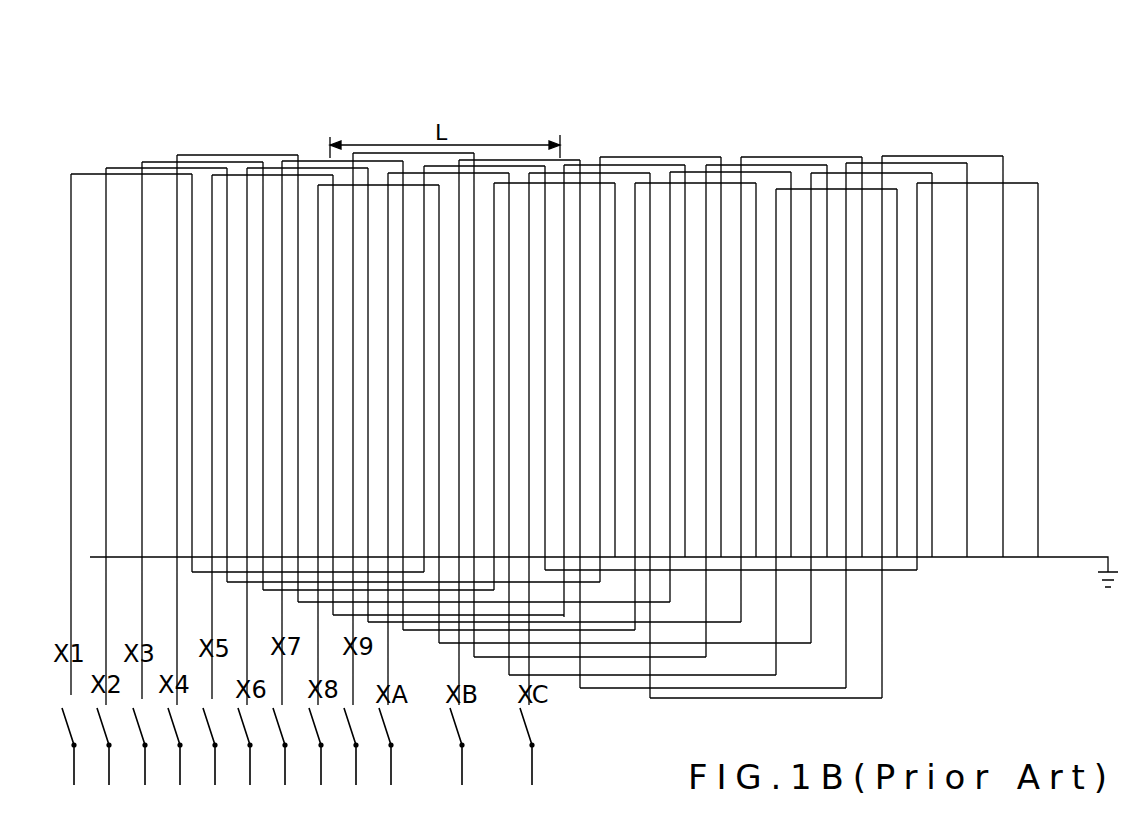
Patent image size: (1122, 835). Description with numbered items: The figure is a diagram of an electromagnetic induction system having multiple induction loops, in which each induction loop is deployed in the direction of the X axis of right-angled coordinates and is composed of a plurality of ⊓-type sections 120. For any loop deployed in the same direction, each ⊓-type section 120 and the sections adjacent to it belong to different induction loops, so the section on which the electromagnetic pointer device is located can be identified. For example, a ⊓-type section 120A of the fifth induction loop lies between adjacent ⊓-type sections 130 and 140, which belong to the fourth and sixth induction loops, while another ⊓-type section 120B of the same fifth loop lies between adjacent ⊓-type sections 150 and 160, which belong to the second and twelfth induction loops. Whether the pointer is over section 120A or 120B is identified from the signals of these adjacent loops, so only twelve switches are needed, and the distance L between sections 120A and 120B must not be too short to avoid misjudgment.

The ⊓-type section 120 is at (555, 82).
The ⊓-type section of induction loop X5 120A is at (257, 160).
The ⊓-type section of induction loop X5 120B is at (657, 158).
The adjacent ⊓-type section 130 is at (203, 155).
The adjacent ⊓-type section 140 is at (247, 255).
The adjacent ⊓-type section 150 is at (670, 158).
The adjacent ⊓-type section 160 is at (643, 243).